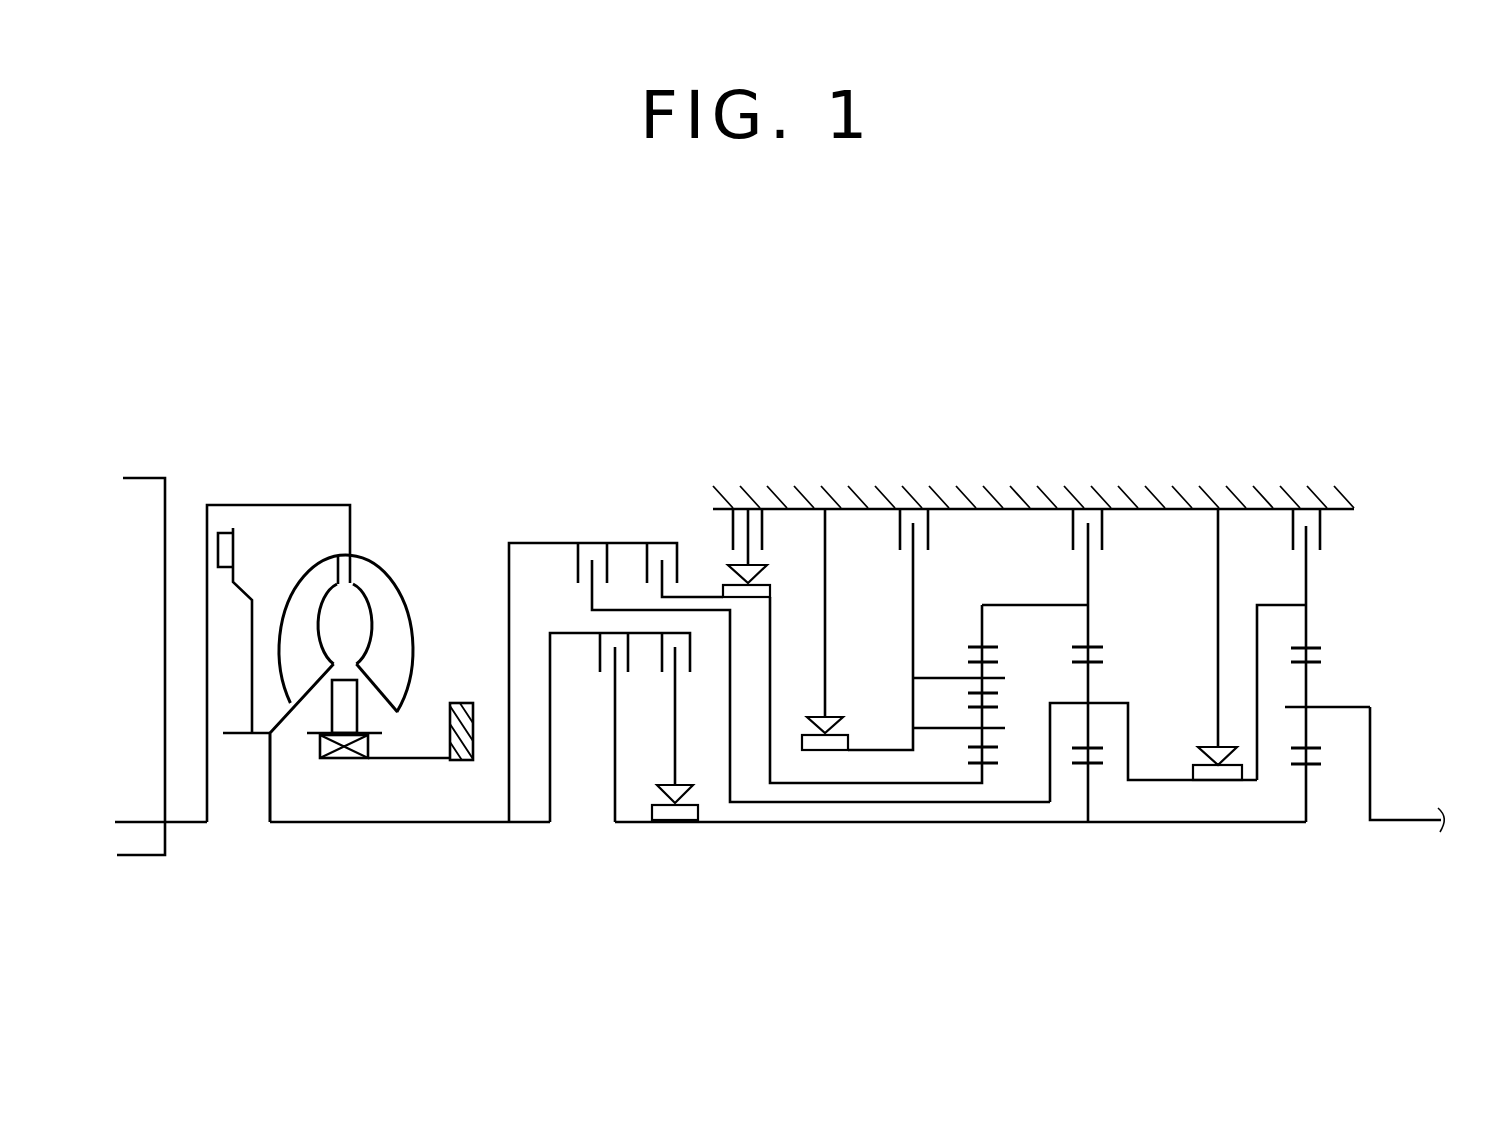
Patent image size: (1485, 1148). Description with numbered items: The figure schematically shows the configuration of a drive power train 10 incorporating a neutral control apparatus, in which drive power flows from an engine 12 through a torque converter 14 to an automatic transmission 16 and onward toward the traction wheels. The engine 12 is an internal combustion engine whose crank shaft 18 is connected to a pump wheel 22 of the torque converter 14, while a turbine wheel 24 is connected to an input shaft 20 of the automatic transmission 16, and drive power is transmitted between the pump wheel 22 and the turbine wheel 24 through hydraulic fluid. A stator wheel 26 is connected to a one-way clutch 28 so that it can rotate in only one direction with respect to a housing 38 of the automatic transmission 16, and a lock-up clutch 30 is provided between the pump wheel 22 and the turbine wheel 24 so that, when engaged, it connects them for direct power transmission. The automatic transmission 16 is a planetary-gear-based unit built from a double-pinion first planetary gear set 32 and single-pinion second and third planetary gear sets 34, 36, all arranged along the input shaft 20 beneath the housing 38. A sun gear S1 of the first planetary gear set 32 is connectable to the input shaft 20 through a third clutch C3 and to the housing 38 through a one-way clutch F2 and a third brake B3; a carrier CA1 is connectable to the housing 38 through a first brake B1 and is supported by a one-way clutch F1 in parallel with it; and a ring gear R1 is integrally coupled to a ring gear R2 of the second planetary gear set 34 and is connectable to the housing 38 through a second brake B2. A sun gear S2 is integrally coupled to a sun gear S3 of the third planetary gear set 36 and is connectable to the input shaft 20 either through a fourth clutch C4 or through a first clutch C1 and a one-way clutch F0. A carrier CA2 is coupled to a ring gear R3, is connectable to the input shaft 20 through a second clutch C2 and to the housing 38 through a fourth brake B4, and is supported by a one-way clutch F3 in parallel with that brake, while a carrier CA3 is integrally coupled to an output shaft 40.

The drive power train 10 is at (575, 312).
The engine 12 is at (138, 493).
The torque converter 14 is at (353, 480).
The automatic transmission 16 is at (1195, 435).
The crank shaft 18 is at (180, 823).
The input shaft 20 is at (387, 825).
The pump wheel 22 is at (377, 580).
The turbine wheel 24 is at (313, 590).
The stator wheel 26 is at (347, 700).
The one-way clutch 28 is at (345, 758).
The lock-up clutch 30 is at (218, 555).
The first planetary gear set 32 is at (978, 792).
The second planetary gear set 34 is at (1083, 830).
The third planetary gear set 36 is at (1293, 840).
The housing 38 is at (458, 703).
The output shaft 40 is at (1400, 822).
The first clutch C1 is at (691, 709).
The second clutch C2 is at (811, 657).
The third clutch C3 is at (682, 554).
The fourth clutch C4 is at (620, 727).
The first brake B1 is at (913, 499).
The second brake B2 is at (1085, 499).
The third brake B3 is at (750, 499).
The fourth brake B4 is at (1304, 499).
The one-way clutch F0 is at (675, 826).
The one-way clutch F1 is at (814, 629).
The one-way clutch F2 is at (767, 553).
The one-way clutch F3 is at (1210, 644).
The sun gear S1 is at (990, 765).
The sun gear S2 is at (1093, 765).
The sun gear S3 is at (1311, 768).
The carrier CA1 is at (912, 697).
The carrier CA2 is at (1103, 702).
The carrier CA3 is at (1327, 707).
The ring gear R1 is at (982, 645).
The ring gear R2 is at (1090, 647).
The ring gear R3 is at (1314, 646).